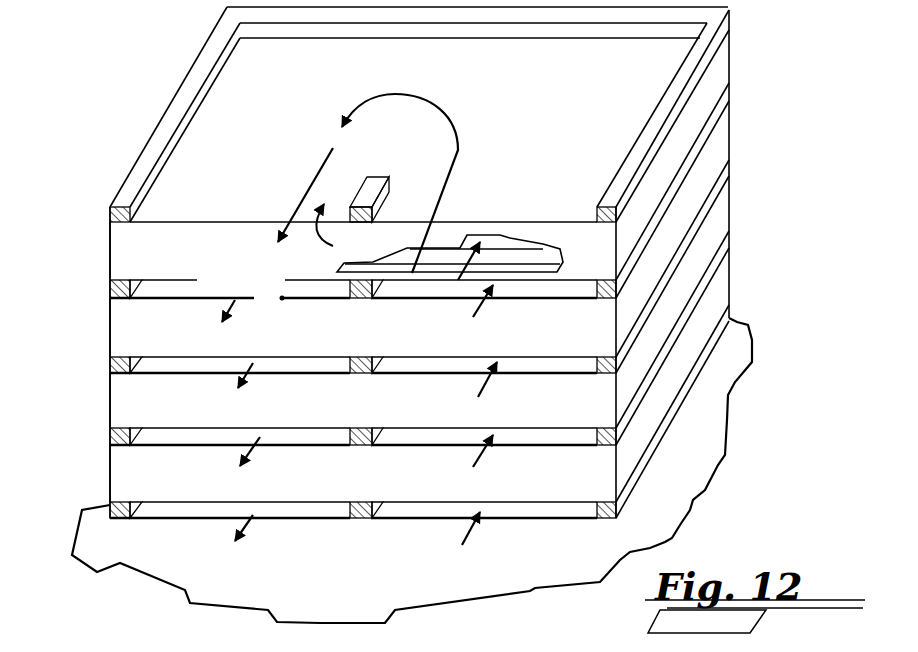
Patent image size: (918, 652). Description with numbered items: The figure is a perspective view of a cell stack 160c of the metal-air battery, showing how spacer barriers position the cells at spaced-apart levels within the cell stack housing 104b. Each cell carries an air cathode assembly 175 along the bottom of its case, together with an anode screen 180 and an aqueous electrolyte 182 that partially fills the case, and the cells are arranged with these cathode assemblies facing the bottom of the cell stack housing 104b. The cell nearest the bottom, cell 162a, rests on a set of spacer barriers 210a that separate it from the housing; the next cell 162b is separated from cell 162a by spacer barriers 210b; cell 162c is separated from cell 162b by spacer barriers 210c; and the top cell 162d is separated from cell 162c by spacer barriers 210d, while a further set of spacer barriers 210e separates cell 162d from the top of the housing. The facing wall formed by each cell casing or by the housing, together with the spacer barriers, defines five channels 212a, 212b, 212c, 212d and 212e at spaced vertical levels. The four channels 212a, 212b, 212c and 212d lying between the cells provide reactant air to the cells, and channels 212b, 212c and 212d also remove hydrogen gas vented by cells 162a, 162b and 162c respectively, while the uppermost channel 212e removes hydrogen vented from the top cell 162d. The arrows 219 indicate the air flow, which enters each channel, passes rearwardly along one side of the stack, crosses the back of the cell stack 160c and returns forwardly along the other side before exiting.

The cell stack housing 104b is at (685, 448).
The cell stack 160c is at (277, 140).
The cell nearest the bottom of the housing 162a is at (133, 475).
The next cell 162b is at (128, 399).
The cell 162c is at (130, 335).
The top cell 162d is at (150, 258).
The air cathode assembly 175 is at (413, 228).
The anode screen 180 is at (517, 243).
The electrolyte 182 is at (455, 257).
The set of spacer barriers 210a is at (118, 520).
The set of spacer barriers 210b is at (110, 438).
The set of spacer barriers 210c is at (110, 365).
The set of spacer barriers 210d is at (110, 293).
The set of spacer barriers 210e is at (147, 157).
The channel 212a is at (300, 517).
The channel 212b is at (183, 437).
The channel 212c is at (296, 366).
The channel 212d is at (283, 301).
The channel 212e is at (350, 228).
The arrows 219 is at (443, 108).